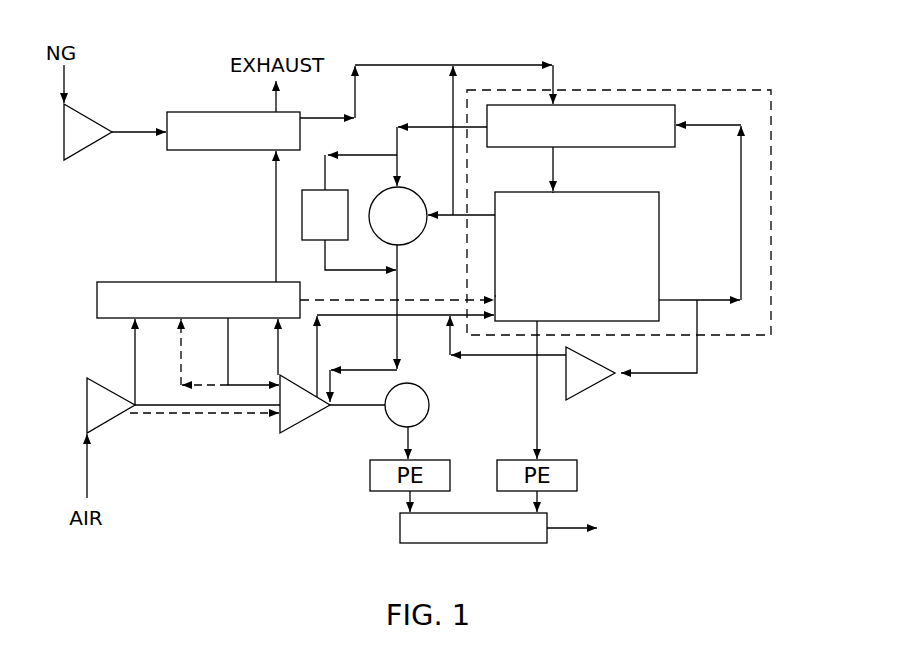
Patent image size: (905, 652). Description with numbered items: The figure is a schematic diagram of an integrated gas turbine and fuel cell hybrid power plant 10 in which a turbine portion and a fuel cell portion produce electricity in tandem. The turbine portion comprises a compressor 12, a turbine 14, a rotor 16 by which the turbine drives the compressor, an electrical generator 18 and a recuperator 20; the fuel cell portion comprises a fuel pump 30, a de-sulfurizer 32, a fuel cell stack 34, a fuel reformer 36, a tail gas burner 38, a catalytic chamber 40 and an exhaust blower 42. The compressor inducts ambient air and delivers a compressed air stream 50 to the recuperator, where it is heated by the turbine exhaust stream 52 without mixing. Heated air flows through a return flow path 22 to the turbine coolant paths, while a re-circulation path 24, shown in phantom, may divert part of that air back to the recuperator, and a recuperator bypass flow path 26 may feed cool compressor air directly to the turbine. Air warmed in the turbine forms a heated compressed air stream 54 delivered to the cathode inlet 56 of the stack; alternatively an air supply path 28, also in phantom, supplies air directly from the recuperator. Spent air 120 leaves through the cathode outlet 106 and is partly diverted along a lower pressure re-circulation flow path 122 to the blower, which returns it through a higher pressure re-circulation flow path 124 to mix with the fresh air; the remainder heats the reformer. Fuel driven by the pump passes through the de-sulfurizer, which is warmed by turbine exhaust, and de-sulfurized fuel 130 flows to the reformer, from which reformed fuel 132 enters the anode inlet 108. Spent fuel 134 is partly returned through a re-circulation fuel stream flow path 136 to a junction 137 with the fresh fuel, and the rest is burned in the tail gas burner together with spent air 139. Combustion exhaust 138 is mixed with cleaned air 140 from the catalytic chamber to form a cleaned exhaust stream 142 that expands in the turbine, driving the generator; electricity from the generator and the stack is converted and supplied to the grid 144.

The integrated gas turbine and fuel cell hybrid power plant 10 is at (625, 60).
The compressor 12 is at (85, 412).
The turbine 14 is at (308, 422).
The rotor 16 is at (185, 406).
The electrical generator 18 is at (430, 413).
The recuperator 20 is at (130, 282).
The return flow path 22 is at (228, 365).
The re-circulation path 24 is at (181, 365).
The recuperator bypass flow path 26 is at (233, 414).
The air supply path 28 is at (452, 300).
The fuel pump 30 is at (75, 160).
The de-sulfurizer 32 is at (248, 150).
The fuel cell stack 34 is at (659, 228).
The fuel reformer 36 is at (597, 148).
The tail gas burner 38 is at (413, 237).
The catalytic chamber 40 is at (302, 210).
The exhaust blower 42 is at (573, 400).
The compressed air stream 50 is at (135, 368).
The turbine exhaust stream 52 is at (276, 222).
The heated compressed air stream 54 is at (378, 316).
The cathode inlet 56 is at (495, 296).
The cathode outlet 106 is at (659, 302).
The anode inlet 108 is at (565, 193).
The spent air 120 is at (703, 125).
The lower pressure re-circulation flow path 122 is at (660, 375).
The higher pressure re-circulation flow path 124 is at (503, 357).
The de-sulfurized fuel 130 is at (367, 63).
The reformed fuel 132 is at (553, 160).
The spent fuel 134 is at (444, 210).
The re-circulation fuel stream flow path 136 is at (453, 163).
The junction 137 is at (453, 63).
The combustion exhaust 138 is at (396, 258).
The spent air 139 is at (435, 125).
The cleaned air 140 is at (322, 250).
The cleaned exhaust stream 142 is at (397, 283).
The grid 144 is at (510, 543).